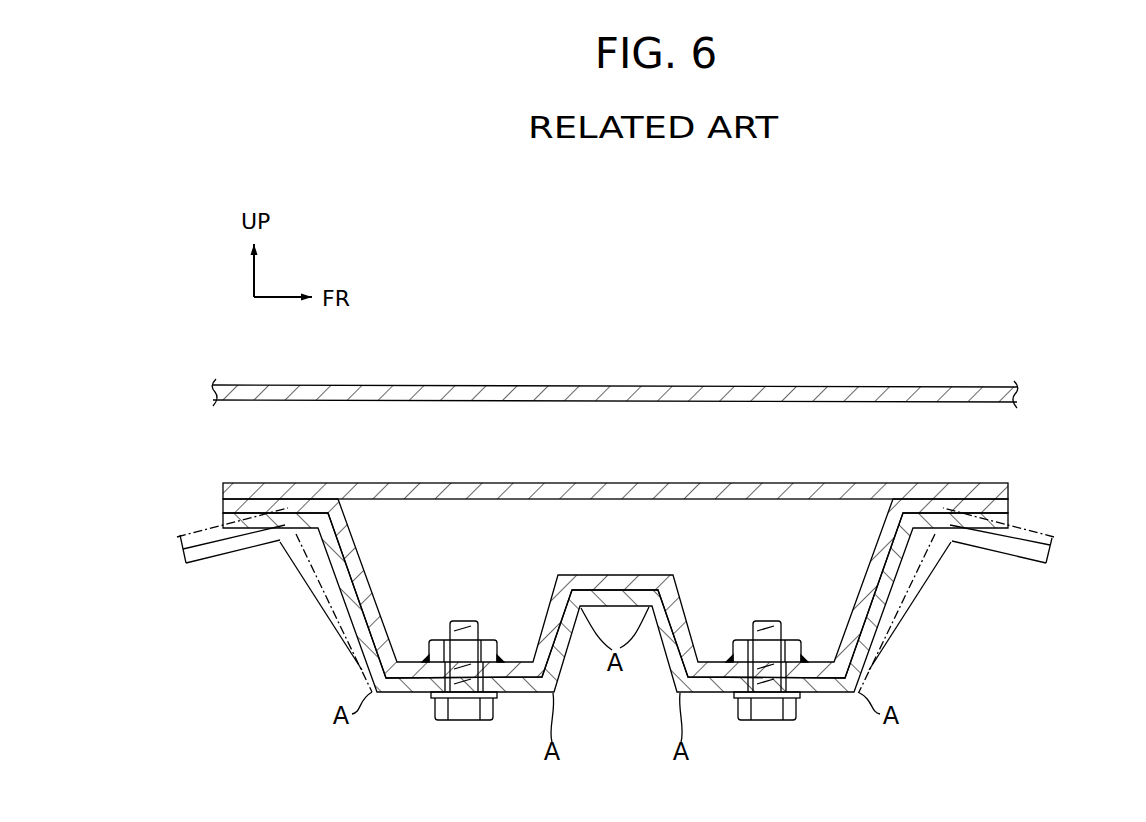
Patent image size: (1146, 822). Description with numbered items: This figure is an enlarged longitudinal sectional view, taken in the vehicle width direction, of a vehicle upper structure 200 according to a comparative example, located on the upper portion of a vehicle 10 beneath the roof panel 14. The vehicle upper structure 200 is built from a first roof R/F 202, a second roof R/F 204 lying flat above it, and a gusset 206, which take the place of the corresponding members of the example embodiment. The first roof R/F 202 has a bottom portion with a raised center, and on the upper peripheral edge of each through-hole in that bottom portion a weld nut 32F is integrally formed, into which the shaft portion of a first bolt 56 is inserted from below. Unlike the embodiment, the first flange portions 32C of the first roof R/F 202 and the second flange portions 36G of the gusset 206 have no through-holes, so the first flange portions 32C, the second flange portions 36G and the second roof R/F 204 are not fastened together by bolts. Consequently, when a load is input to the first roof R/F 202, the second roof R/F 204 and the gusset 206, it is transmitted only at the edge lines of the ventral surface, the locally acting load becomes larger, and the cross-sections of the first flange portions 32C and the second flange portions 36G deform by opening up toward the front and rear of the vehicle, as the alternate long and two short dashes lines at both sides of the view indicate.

The vehicle 10 is at (998, 306).
The roof panel 14 is at (625, 383).
The vehicle upper structure 200 is at (1039, 482).
The first roof R/F 202 is at (642, 573).
The second roof R/F 204 is at (635, 480).
The gusset 206 is at (664, 663).
The first flange portion 32C is at (222, 501).
The second flange portion 36G is at (222, 517).
The weld nut 32F is at (438, 644).
The first bolt 56 is at (467, 715).